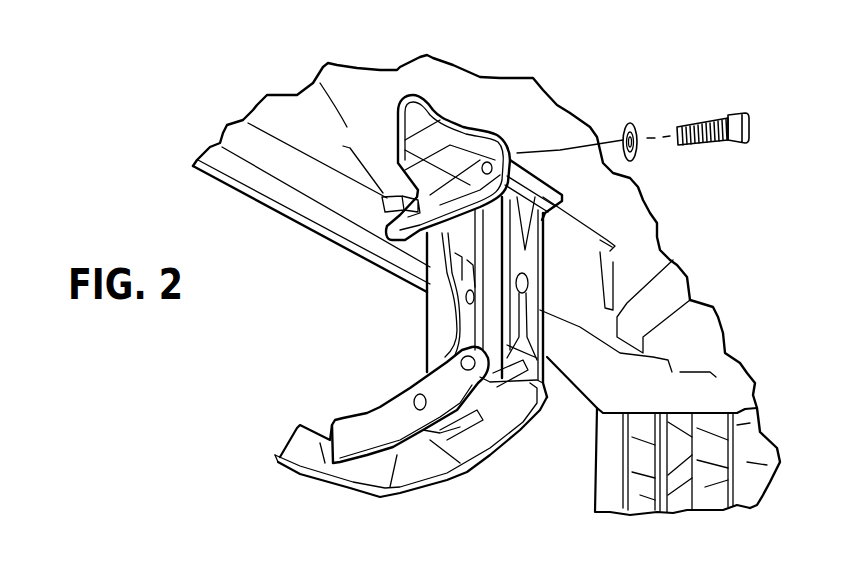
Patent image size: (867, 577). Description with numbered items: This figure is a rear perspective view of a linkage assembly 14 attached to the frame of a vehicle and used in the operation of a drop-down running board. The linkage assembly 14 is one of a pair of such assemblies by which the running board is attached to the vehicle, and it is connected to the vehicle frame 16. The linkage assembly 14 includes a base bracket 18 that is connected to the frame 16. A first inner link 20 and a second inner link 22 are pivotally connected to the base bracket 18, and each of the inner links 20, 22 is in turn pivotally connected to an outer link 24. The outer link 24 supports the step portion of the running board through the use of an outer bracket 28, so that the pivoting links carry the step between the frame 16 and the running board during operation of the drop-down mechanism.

The linkage assembly 14 is at (552, 131).
The vehicle frame 16 is at (298, 110).
The base bracket 18 is at (420, 98).
The first inner link 20 is at (432, 337).
The second inner link 22 is at (532, 289).
The outer link 24 is at (378, 443).
The outer bracket 28 is at (295, 440).